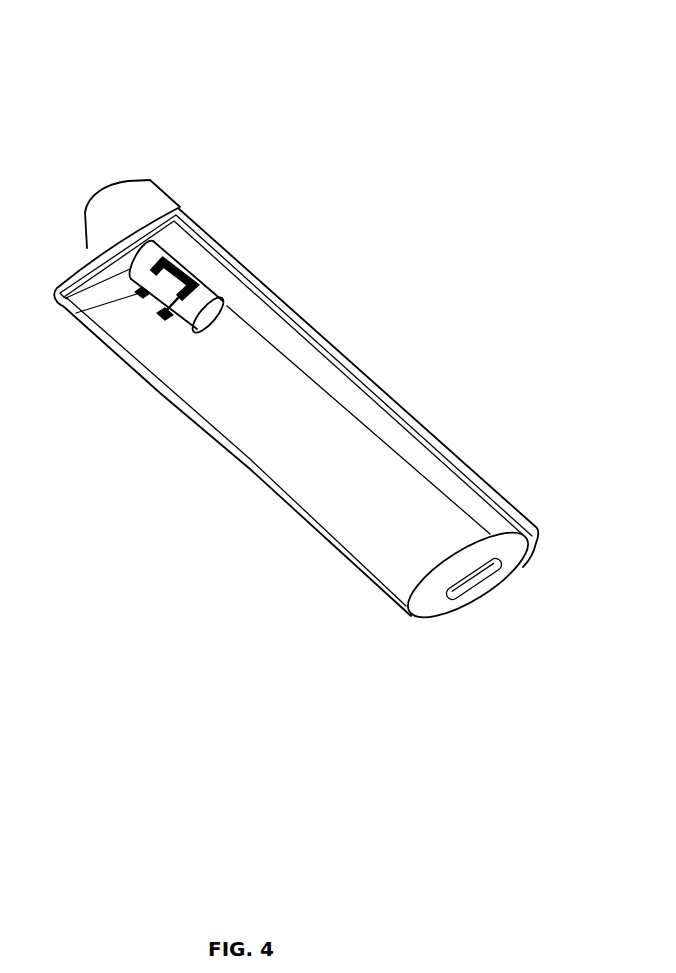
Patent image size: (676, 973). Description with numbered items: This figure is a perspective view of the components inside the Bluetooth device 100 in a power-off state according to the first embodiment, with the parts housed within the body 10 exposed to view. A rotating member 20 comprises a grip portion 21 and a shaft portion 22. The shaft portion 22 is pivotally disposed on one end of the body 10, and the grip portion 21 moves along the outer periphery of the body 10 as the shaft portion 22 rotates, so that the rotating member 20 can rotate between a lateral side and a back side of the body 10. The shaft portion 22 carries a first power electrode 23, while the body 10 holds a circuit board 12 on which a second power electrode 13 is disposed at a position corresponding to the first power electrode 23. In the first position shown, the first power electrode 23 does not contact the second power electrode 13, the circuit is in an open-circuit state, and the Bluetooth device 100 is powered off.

The Bluetooth device 100 is at (538, 70).
The body 10 is at (517, 552).
The circuit board 12 is at (182, 387).
The second power electrode 13 is at (88, 307).
The rotating member 20 is at (357, 227).
The grip portion 21 is at (320, 336).
The shaft portion 22 is at (192, 280).
The first power electrode 23 is at (168, 258).